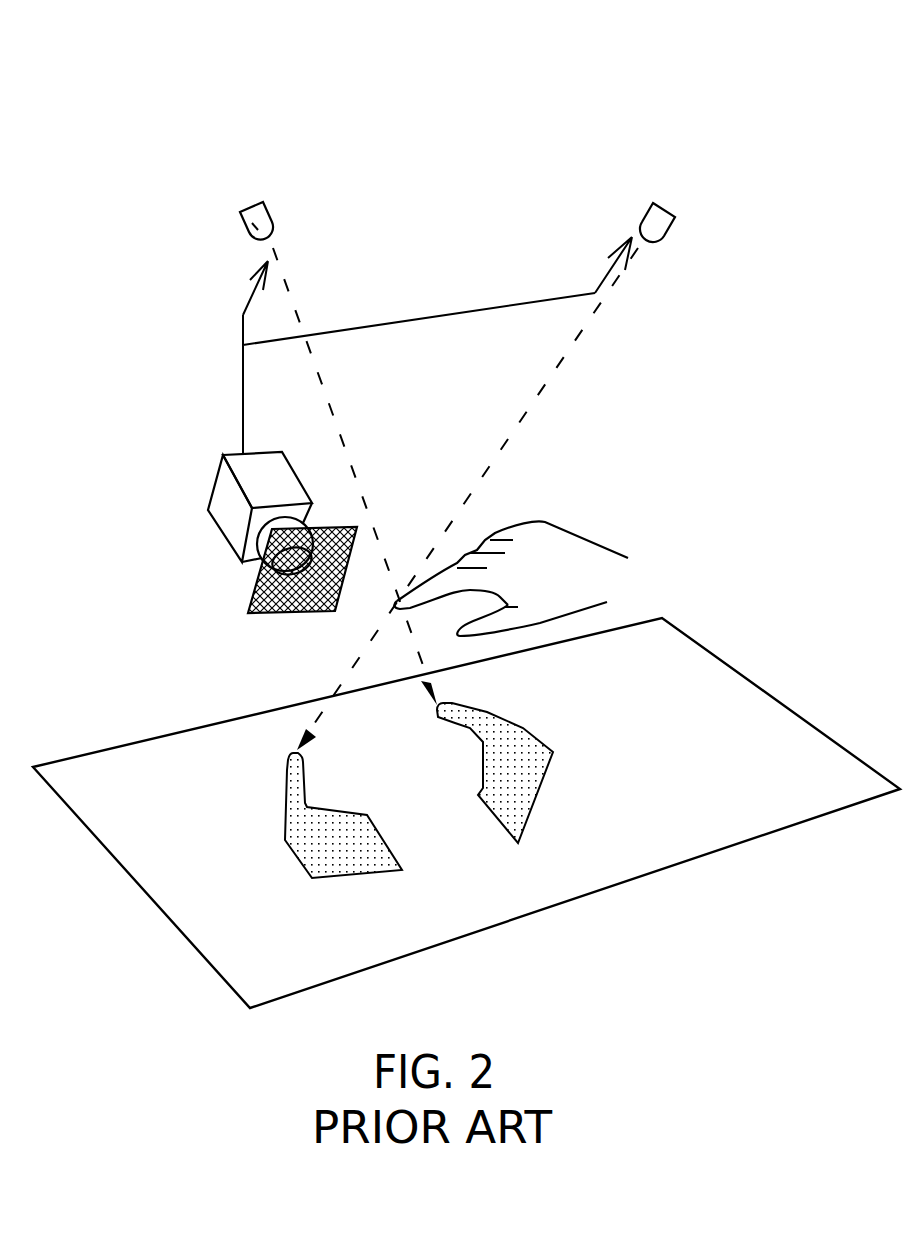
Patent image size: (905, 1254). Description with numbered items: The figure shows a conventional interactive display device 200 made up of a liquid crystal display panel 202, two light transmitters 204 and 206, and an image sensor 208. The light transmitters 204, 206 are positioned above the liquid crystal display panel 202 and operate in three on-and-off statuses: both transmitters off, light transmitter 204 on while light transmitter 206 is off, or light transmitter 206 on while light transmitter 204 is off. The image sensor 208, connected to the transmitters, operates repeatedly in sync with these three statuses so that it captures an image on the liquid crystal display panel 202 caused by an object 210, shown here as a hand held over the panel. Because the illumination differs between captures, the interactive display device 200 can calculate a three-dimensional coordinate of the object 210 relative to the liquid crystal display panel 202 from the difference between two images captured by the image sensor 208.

The interactive display device 200 is at (716, 62).
The liquid crystal display panel 202 is at (698, 673).
The light transmitter 204 is at (253, 225).
The light transmitter 206 is at (655, 225).
The image sensor 208 is at (225, 495).
The object 210 is at (563, 547).